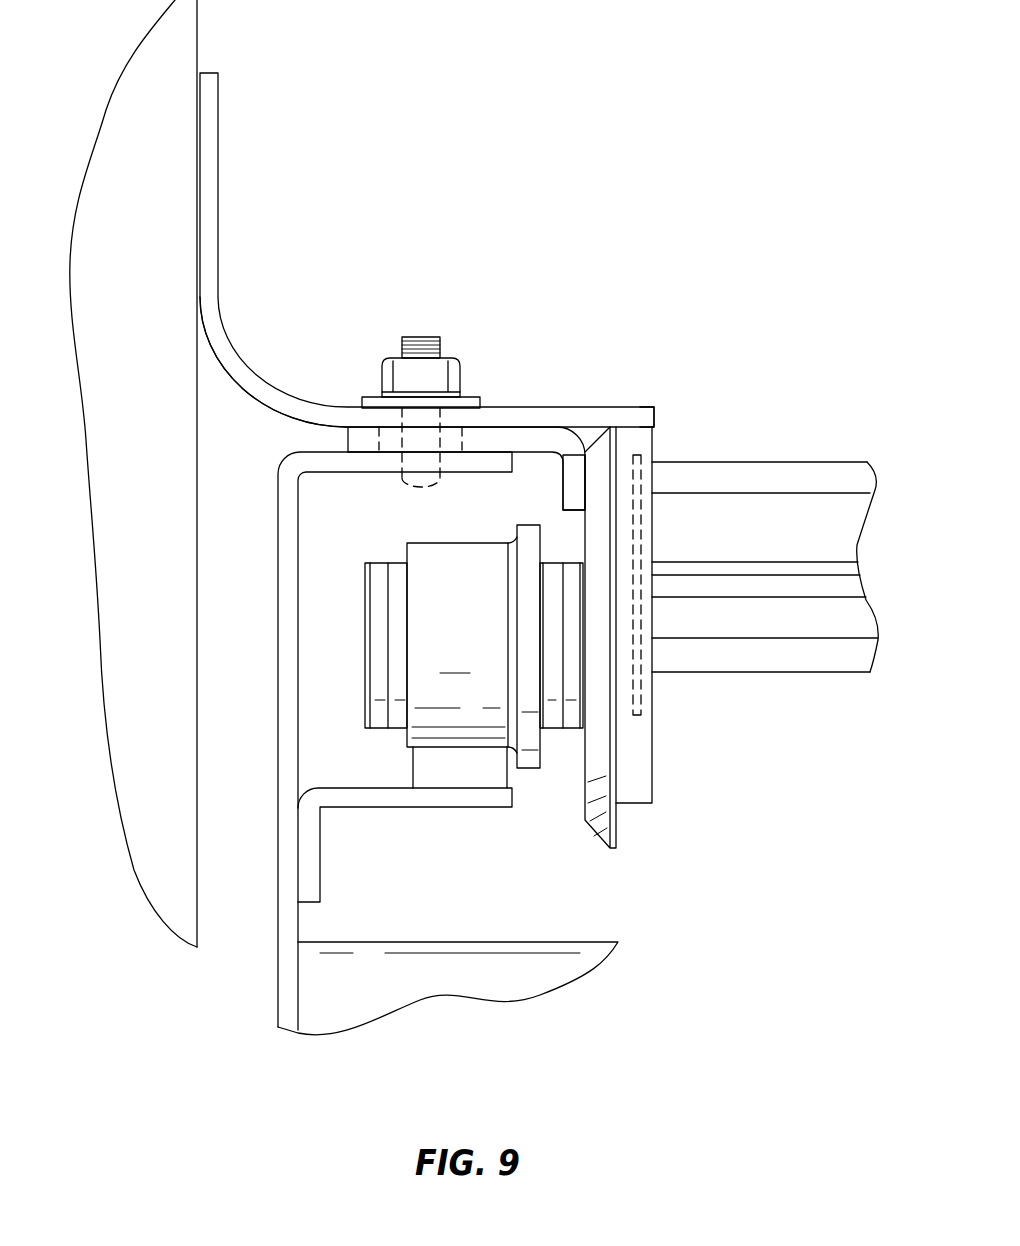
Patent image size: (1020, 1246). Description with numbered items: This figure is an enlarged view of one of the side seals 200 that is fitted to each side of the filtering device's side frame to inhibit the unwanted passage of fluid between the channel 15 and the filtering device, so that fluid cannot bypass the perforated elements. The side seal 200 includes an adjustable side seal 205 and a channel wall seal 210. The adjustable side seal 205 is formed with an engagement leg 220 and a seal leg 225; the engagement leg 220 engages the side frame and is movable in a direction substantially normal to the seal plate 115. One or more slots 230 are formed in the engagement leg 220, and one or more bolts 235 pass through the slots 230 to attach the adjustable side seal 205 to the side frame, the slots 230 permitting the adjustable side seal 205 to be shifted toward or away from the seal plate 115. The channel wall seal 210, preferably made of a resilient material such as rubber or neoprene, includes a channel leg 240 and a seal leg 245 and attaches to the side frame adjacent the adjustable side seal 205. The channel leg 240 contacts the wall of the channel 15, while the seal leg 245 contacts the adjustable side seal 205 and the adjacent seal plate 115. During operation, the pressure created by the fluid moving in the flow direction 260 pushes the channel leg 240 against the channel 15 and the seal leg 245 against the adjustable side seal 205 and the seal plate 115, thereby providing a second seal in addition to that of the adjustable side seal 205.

The channel 15 is at (178, 33).
The channel leg 240 is at (210, 132).
The channel wall seal 210 is at (265, 387).
The bolt 235 is at (420, 336).
The slot 230 is at (461, 449).
The adjustable side seal 205 is at (538, 438).
The seal leg 225 is at (573, 490).
The seal plate 115 is at (633, 793).
The seal leg 245 is at (643, 405).
The engagement leg 220 is at (365, 443).
The side seal 200 is at (643, 163).
The flow direction 260 is at (785, 283).